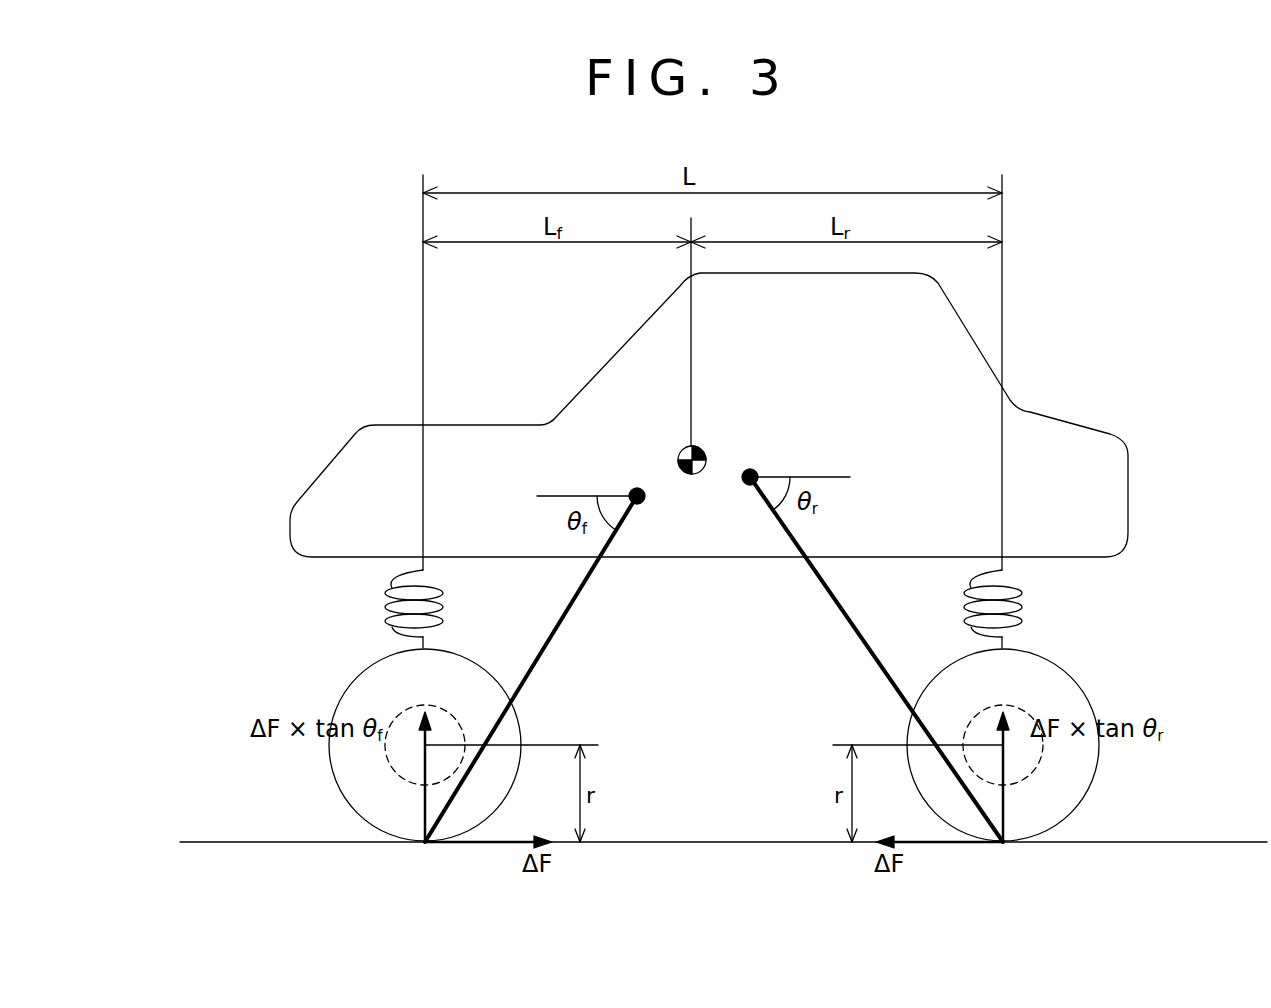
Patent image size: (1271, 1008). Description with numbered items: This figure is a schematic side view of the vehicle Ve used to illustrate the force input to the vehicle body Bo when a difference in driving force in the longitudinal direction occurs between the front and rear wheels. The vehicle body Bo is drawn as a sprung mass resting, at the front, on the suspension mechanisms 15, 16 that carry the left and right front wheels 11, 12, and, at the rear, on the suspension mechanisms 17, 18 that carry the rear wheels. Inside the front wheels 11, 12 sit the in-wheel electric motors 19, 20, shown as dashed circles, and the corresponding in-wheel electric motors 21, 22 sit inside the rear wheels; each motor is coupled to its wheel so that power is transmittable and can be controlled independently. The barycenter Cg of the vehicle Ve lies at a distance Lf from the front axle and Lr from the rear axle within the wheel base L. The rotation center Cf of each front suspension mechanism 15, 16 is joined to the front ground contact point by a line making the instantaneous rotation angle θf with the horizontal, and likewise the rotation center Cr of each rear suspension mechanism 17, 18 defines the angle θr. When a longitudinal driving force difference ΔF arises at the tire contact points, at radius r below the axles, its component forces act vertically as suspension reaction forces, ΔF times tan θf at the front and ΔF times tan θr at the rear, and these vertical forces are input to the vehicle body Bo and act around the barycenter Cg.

The left front wheel 11 is at (389, 745).
The right front wheel 12 is at (366, 670).
The suspension mechanism 15 is at (361, 603).
The suspension mechanism 16 is at (386, 596).
The suspension mechanism 17 is at (1045, 603).
The suspension mechanism 18 is at (1022, 590).
The electric motor 19 is at (458, 700).
The electric motor 20 is at (455, 717).
The electric motor 21 is at (963, 700).
The electric motor 22 is at (972, 717).
The vehicle Ve is at (709, 415).
The vehicle body Bo is at (1092, 399).
The barycenter Cg is at (681, 450).
The rotation center Cf is at (646, 498).
The rotation center Cr is at (757, 470).